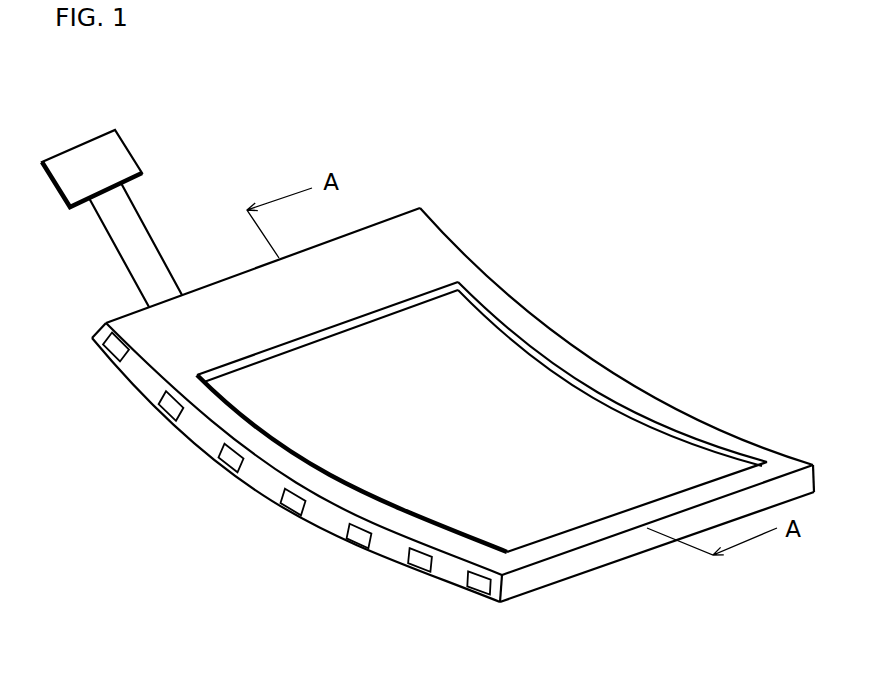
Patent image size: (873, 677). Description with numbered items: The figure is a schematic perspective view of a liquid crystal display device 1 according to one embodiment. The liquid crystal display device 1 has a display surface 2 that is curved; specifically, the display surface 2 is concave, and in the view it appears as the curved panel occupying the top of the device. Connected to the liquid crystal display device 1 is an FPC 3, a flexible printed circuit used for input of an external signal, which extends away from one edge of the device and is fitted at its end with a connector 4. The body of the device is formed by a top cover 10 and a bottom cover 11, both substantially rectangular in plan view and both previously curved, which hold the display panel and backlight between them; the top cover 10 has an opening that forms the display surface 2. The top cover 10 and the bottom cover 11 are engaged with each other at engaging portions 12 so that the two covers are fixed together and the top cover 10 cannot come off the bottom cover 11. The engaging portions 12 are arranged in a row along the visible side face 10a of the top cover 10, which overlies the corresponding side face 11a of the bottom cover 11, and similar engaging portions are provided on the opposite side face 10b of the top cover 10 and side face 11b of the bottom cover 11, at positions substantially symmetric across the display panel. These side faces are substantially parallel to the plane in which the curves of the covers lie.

The liquid crystal display device 1 is at (562, 142).
The display surface 2 is at (483, 352).
The FPC (flexible printed circuit) 3 is at (145, 245).
The connector 4 is at (120, 150).
The top cover 10 is at (432, 238).
The side face of top cover 10a is at (107, 318).
The side face of top cover 10b is at (600, 370).
The bottom cover 11 is at (523, 597).
The side face of bottom cover 11a is at (99, 330).
The side face of bottom cover 11b is at (616, 336).
The engaging portions 12 is at (479, 583).